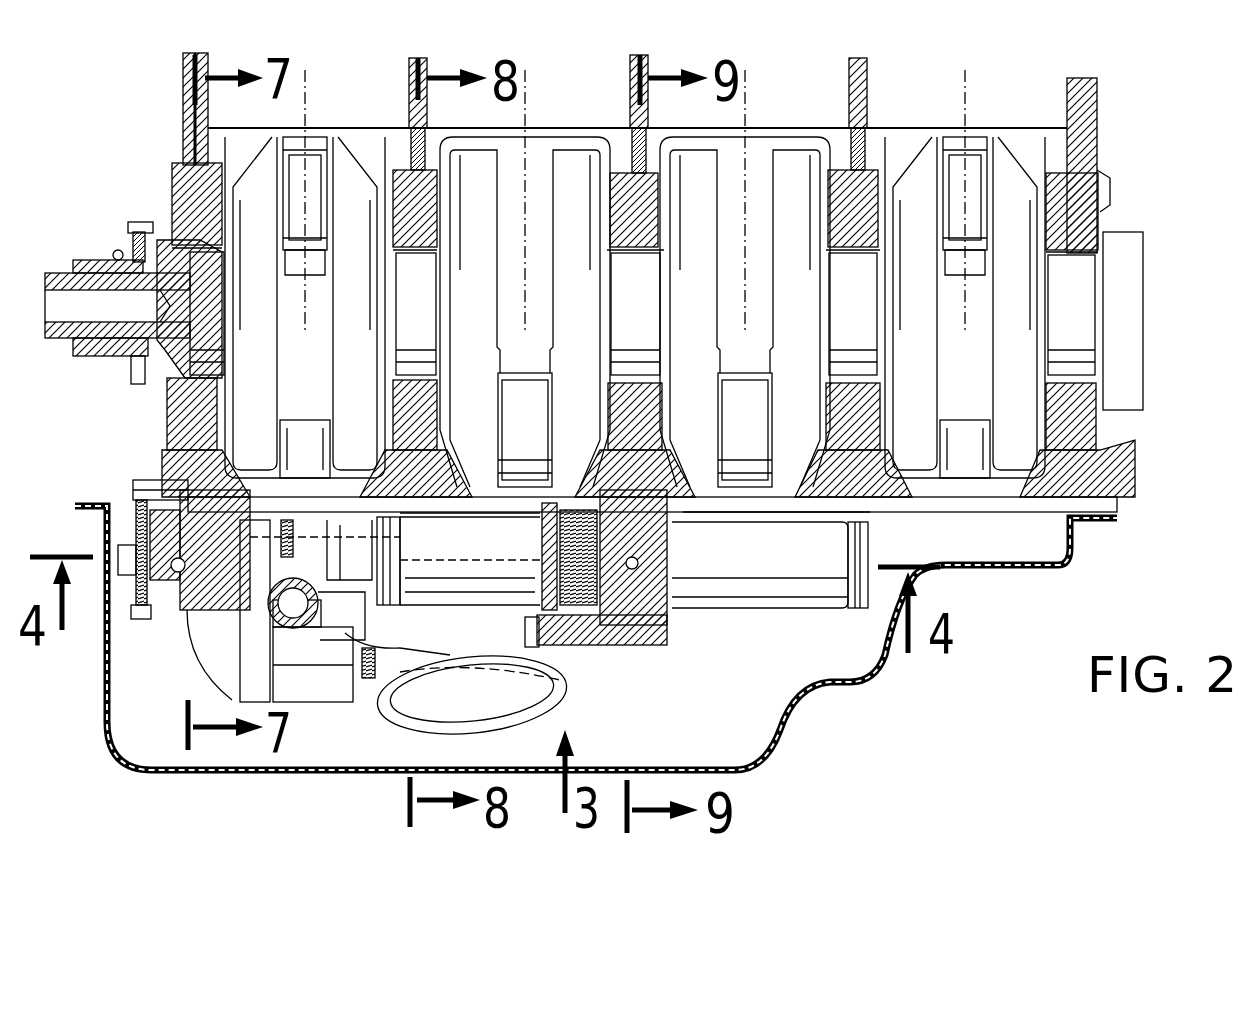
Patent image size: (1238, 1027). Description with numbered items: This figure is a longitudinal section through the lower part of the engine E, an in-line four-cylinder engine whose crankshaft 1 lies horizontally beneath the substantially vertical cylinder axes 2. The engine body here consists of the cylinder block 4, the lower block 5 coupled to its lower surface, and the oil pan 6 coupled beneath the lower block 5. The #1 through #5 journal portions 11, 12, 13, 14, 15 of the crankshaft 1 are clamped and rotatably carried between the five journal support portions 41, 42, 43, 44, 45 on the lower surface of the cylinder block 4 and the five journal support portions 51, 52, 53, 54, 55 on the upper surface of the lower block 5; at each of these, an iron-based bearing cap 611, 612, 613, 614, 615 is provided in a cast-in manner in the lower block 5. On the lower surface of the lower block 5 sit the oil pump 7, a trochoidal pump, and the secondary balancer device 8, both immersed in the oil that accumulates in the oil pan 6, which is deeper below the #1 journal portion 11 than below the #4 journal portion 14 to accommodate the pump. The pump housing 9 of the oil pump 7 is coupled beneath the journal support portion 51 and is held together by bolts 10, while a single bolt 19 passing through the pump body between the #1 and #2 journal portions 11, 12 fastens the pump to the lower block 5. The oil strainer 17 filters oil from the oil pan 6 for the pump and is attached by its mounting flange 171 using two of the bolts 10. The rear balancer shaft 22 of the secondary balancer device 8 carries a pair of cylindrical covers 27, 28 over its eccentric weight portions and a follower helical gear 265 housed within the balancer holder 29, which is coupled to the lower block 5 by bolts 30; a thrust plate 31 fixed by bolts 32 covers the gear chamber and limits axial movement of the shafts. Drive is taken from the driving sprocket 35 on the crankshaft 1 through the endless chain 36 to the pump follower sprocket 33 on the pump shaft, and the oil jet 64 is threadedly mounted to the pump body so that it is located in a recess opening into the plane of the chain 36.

The engine E is at (1108, 165).
The crankshaft 1 is at (1150, 238).
The cylinder axis 2 is at (307, 97).
The cylinder block 4 is at (183, 100).
The journal support portion 41 is at (190, 150).
The journal support portion 42 is at (393, 214).
The journal support portion 43 is at (610, 200).
The journal support portion 44 is at (830, 212).
The journal support portion 45 is at (1048, 235).
The lower block 5 is at (167, 440).
The journal support portion 51 is at (170, 412).
The journal support portion 52 is at (392, 430).
The journal support portion 53 is at (607, 447).
The journal support portion 54 is at (830, 458).
The journal support portion 55 is at (1040, 476).
The journal portion 11 is at (220, 322).
The journal portion 12 is at (422, 335).
The journal portion 13 is at (643, 330).
The journal portion 14 is at (863, 335).
The journal portion 15 is at (1080, 335).
The bearing cap 611 is at (248, 393).
The bearing cap 612 is at (420, 395).
The bearing cap 613 is at (660, 400).
The bearing cap 614 is at (883, 380).
The bearing cap 615 is at (1080, 400).
The oil pan 6 is at (983, 573).
The oil pump 7 is at (200, 665).
The secondary balancer device 8 is at (683, 622).
The pump housing 9 is at (352, 805).
The bolt 10 is at (300, 518).
The oil strainer 17 is at (565, 705).
The mounting flange 171 is at (350, 628).
The bolt 19 is at (396, 546).
The rear balancer shaft 22 is at (825, 613).
The follower helical gear 265 is at (587, 652).
The cylindrical cover 27 is at (466, 600).
The cylindrical cover 28 is at (762, 605).
The balancer holder 29 is at (663, 657).
The bolt 30 is at (633, 647).
The thrust plate 31 is at (540, 540).
The bolt 32 is at (528, 624).
The pump follower sprocket 33 is at (137, 522).
The driving sprocket 35 is at (130, 375).
The endless chain 36 is at (140, 218).
The oil jet 64 is at (130, 490).